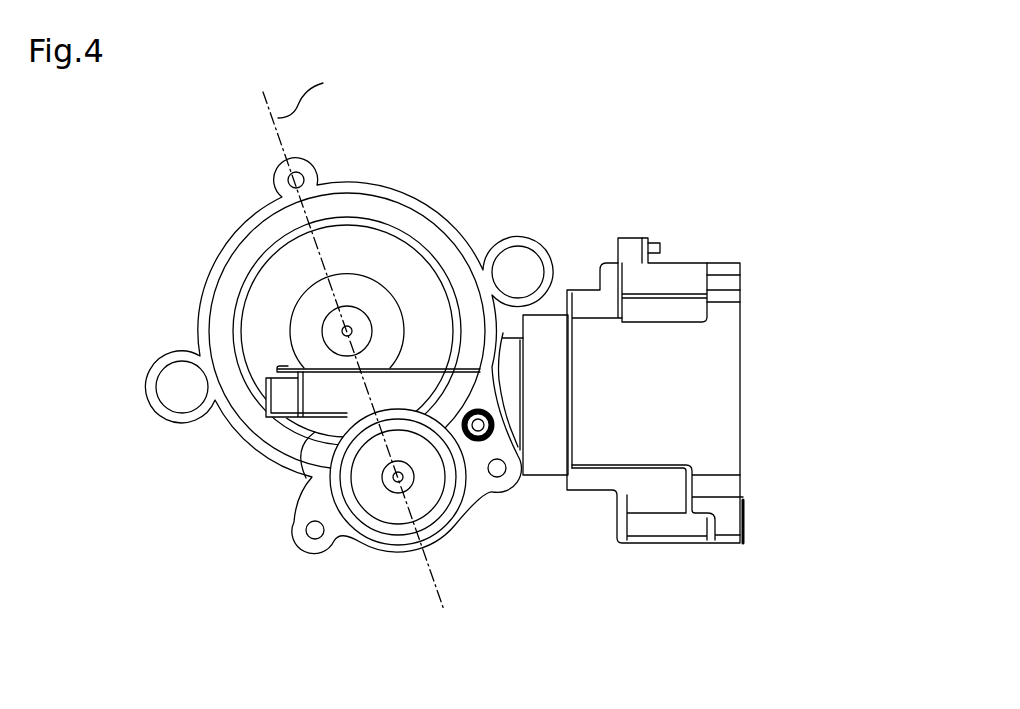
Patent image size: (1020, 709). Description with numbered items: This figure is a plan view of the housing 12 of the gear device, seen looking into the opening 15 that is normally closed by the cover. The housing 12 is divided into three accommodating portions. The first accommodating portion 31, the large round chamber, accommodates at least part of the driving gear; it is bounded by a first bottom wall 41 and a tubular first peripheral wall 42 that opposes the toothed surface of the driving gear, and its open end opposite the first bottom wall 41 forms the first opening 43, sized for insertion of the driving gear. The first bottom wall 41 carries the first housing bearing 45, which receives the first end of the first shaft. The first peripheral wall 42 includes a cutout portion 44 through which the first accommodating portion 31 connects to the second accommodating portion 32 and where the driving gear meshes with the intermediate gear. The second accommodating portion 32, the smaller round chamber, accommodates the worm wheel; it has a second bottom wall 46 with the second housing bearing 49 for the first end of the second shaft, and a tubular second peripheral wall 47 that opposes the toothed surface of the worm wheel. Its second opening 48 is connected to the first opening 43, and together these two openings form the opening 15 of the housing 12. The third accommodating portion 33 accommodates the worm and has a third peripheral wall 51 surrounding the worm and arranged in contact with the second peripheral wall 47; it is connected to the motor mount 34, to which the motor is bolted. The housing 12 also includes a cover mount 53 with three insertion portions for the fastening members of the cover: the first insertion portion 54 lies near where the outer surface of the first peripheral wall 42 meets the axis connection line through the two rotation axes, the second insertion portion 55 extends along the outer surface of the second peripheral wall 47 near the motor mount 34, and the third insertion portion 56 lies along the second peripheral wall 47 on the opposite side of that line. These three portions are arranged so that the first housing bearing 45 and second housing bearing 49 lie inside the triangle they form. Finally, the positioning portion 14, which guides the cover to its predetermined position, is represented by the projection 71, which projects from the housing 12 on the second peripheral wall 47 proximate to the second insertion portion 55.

The housing 12 is at (444, 361).
The positioning portion 14 is at (604, 373).
The opening 15 is at (380, 392).
The first accommodating portion 31 is at (231, 453).
The second accommodating portion 32 is at (423, 531).
The third accommodating portion 33 is at (425, 360).
The motor mount 34 is at (684, 262).
The first bottom wall 41 is at (350, 237).
The first peripheral wall 42 is at (412, 190).
The first opening 43 is at (438, 232).
The cutout portion 44 is at (313, 435).
The first housing bearing 45 is at (358, 305).
The second bottom wall 46 is at (402, 512).
The second peripheral wall 47 is at (442, 540).
The second opening 48 is at (447, 518).
The second housing bearing 49 is at (416, 479).
The third peripheral wall 51 is at (404, 383).
The cover mount 53 is at (391, 389).
The first insertion portion 54 is at (272, 183).
The second insertion portion 55 is at (517, 483).
The third insertion portion 56 is at (307, 545).
The projection 71 is at (508, 414).